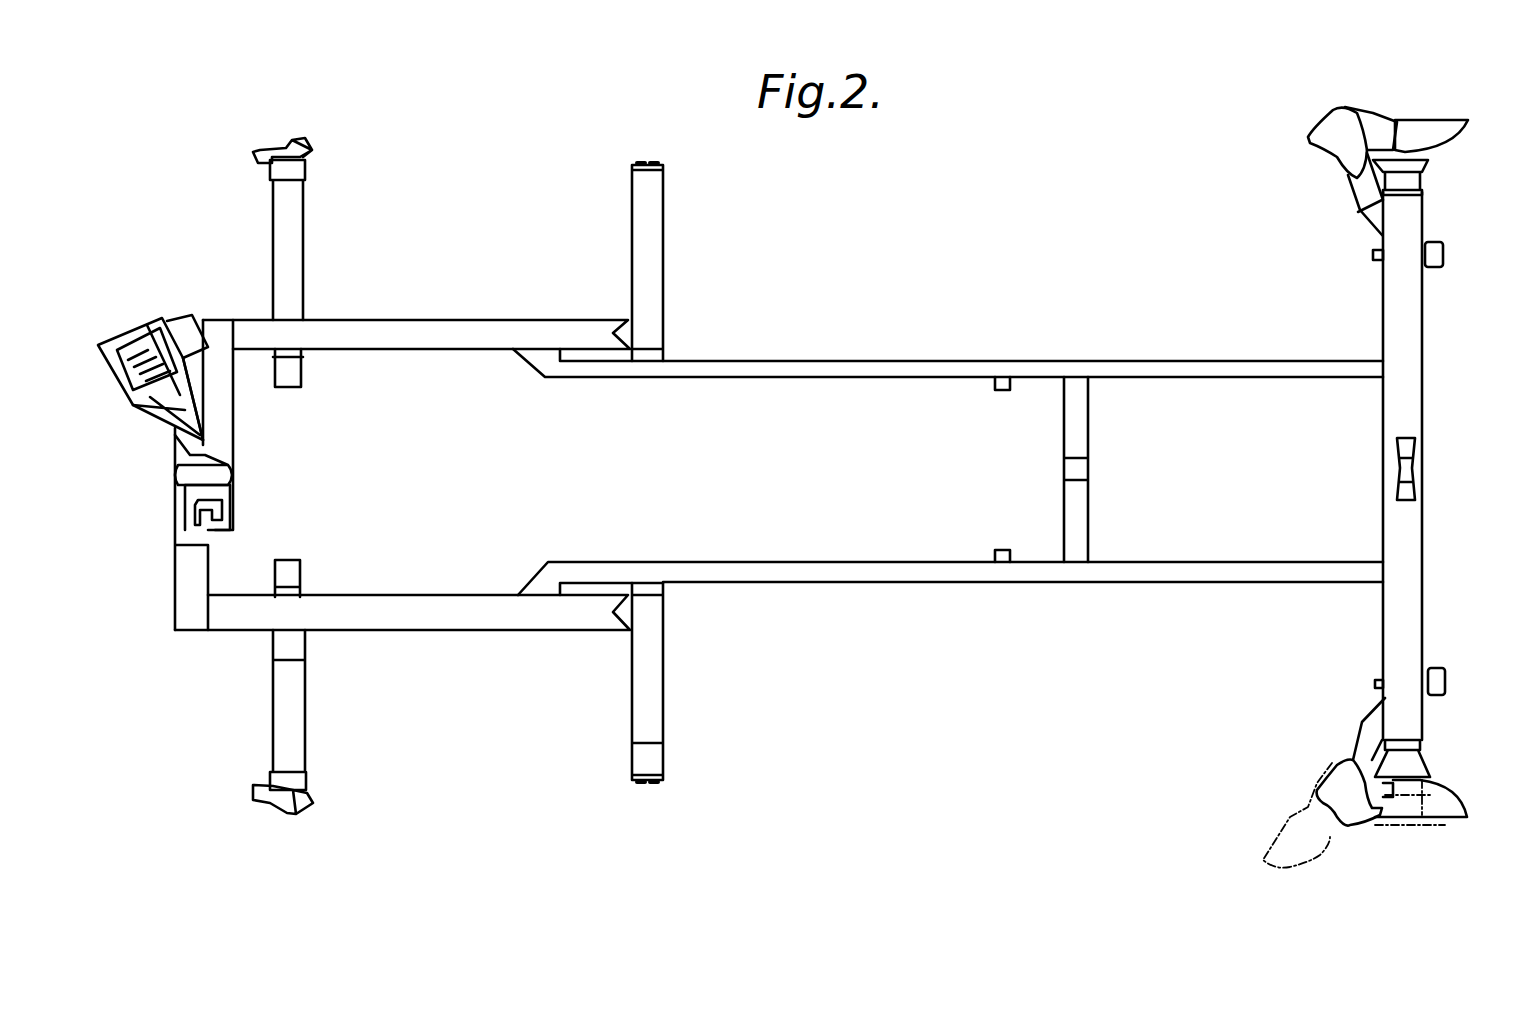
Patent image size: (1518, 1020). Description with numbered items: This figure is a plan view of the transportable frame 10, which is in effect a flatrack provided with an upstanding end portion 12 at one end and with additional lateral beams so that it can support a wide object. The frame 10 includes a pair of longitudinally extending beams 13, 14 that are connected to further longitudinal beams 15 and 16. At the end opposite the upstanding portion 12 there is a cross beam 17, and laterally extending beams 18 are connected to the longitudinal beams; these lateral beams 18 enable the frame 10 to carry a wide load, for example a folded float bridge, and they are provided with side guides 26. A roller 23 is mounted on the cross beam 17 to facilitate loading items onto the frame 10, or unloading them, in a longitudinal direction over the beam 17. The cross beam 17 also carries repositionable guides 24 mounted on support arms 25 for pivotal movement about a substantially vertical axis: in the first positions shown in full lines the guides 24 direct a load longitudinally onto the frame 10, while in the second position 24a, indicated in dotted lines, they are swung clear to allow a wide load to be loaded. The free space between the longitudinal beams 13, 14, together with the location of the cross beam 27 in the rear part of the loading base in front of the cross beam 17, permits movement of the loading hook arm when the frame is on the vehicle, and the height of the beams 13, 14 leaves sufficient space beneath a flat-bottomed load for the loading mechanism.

The transportable frame 10 is at (830, 352).
The upstanding end portion 12 is at (183, 594).
The longitudinally extending beam 13 is at (968, 365).
The longitudinally extending beam 14 is at (903, 574).
The longitudinal beam 15 is at (460, 328).
The longitudinal beam 16 is at (437, 612).
The cross beam 17 is at (1402, 419).
The laterally extending beam 18 is at (651, 263).
The roller 23 is at (1407, 470).
The repositionable guide 24 is at (1440, 132).
The second position of guide 24a is at (1287, 828).
The support arm 25 is at (1377, 133).
The side guide 26 is at (284, 148).
The cross beam 27 is at (1079, 423).